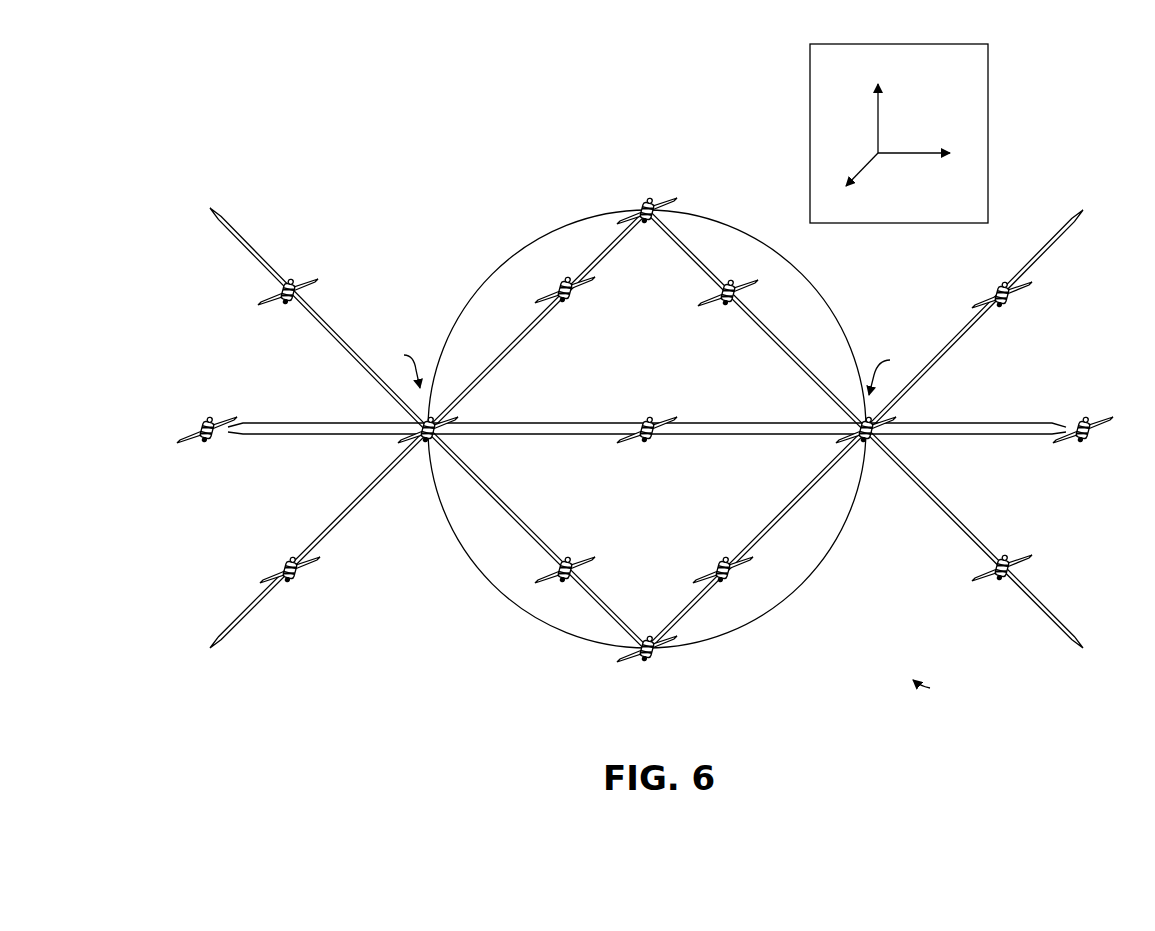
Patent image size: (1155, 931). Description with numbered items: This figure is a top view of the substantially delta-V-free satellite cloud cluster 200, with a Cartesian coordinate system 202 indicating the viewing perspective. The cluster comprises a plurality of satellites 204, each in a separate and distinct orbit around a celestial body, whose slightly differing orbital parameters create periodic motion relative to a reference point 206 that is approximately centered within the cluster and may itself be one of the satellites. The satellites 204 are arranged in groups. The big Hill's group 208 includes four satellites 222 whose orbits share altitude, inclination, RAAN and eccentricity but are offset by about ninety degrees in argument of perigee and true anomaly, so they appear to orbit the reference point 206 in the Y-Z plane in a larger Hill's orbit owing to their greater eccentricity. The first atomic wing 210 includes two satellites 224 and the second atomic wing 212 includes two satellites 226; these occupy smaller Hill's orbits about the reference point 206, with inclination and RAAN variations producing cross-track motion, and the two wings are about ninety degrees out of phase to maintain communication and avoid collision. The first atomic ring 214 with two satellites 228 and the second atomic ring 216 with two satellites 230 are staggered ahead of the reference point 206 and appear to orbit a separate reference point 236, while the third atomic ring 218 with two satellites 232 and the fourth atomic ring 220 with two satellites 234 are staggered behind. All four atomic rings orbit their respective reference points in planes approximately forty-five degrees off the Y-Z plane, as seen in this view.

The satellite cloud cluster 200 is at (316, 86).
The Cartesian coordinate system 202 is at (810, 122).
The satellites 204 is at (945, 690).
The reference point 206 is at (630, 406).
The big Hill's group 208 is at (950, 424).
The first atomic wing 210 is at (683, 429).
The second atomic wing 212 is at (822, 282).
The first atomic ring 214 is at (338, 334).
The second atomic ring 216 is at (360, 492).
The third atomic ring 218 is at (936, 490).
The fourth atomic ring 220 is at (964, 338).
The satellites 222 is at (216, 416).
The satellites 224 is at (656, 196).
The satellites 226 is at (425, 446).
The satellites 228 is at (298, 280).
The satellites 230 is at (577, 306).
The satellites 232 is at (720, 307).
The satellites 234 is at (990, 284).
The reference point 236 is at (652, 368).